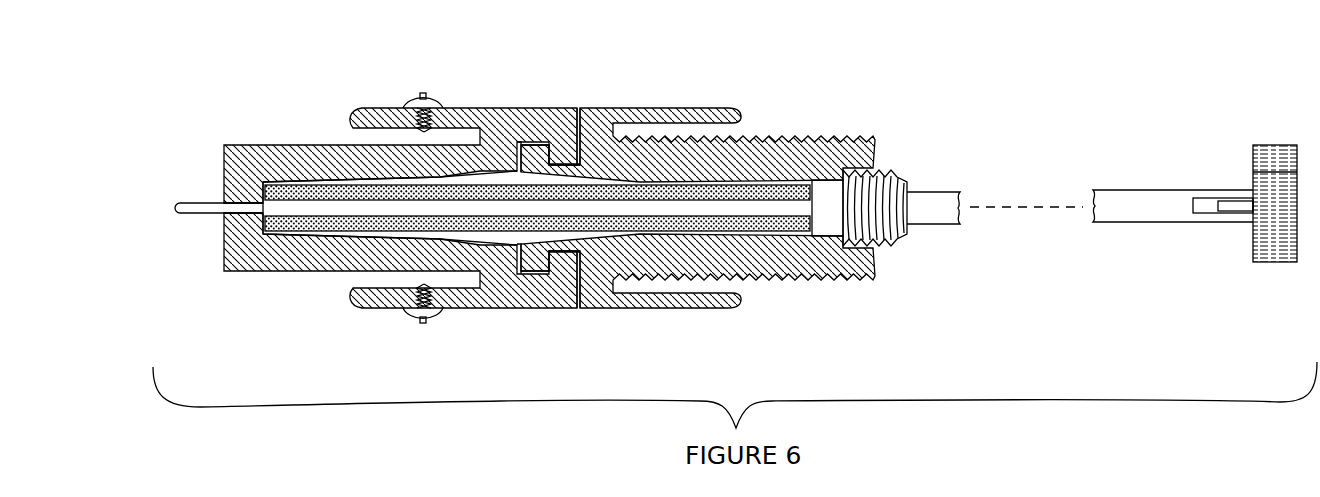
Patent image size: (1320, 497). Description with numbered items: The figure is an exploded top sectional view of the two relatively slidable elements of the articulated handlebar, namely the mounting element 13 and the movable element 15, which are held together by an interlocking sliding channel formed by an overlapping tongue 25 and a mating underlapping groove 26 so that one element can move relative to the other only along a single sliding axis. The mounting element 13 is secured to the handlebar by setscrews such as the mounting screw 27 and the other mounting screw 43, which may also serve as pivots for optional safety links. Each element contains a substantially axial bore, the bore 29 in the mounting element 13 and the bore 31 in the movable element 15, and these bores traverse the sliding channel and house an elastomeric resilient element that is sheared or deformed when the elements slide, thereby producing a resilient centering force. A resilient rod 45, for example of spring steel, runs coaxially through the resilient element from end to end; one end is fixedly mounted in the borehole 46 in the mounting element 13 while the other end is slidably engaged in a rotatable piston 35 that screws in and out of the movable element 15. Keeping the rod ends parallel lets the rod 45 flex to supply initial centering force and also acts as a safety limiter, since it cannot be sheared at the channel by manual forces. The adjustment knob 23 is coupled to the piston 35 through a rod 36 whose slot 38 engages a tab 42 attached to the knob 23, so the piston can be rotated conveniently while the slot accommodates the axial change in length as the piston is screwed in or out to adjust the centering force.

The mounting element 13 is at (481, 108).
The movable element 15 is at (668, 107).
The adjustment knob 23 is at (1276, 147).
The tongue 25 is at (535, 150).
The groove 26 is at (565, 140).
The mounting screw 27 is at (405, 316).
The axial bore 29 is at (337, 184).
The axial bore 31 is at (768, 180).
The rotatable piston 35 is at (907, 182).
The rod 36 is at (946, 193).
The slot 38 is at (1205, 199).
The tab 42 is at (1237, 206).
The mounting screw 43 is at (417, 95).
The resilient rod 45 is at (196, 205).
The borehole 46 is at (240, 218).